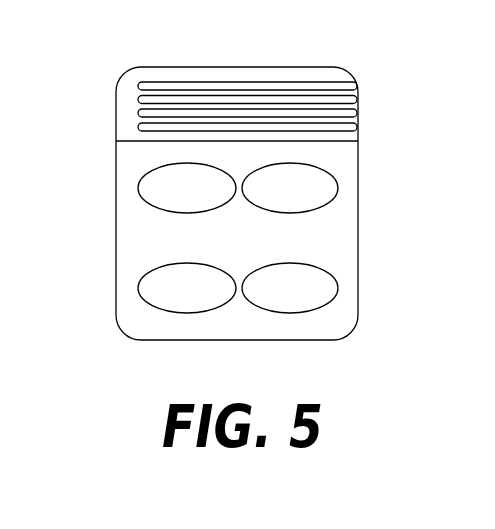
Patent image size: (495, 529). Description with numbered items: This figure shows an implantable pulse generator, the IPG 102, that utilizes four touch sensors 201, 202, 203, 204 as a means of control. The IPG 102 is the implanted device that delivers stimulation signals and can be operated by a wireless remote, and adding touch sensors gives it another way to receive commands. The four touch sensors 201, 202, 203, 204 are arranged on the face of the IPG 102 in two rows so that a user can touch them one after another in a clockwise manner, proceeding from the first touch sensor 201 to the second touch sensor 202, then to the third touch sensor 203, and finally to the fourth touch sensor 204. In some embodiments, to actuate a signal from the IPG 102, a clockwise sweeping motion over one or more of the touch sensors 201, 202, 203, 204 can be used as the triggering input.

The IPG 102 is at (323, 93).
The touch sensor 201 is at (146, 184).
The touch sensor 202 is at (325, 180).
The touch sensor 203 is at (316, 284).
The touch sensor 204 is at (146, 285).